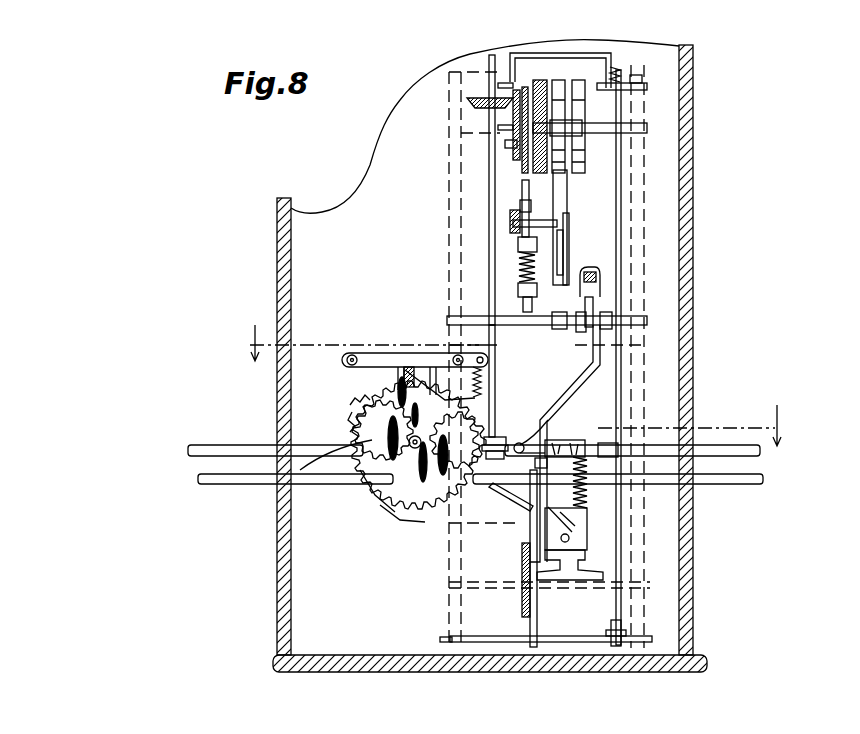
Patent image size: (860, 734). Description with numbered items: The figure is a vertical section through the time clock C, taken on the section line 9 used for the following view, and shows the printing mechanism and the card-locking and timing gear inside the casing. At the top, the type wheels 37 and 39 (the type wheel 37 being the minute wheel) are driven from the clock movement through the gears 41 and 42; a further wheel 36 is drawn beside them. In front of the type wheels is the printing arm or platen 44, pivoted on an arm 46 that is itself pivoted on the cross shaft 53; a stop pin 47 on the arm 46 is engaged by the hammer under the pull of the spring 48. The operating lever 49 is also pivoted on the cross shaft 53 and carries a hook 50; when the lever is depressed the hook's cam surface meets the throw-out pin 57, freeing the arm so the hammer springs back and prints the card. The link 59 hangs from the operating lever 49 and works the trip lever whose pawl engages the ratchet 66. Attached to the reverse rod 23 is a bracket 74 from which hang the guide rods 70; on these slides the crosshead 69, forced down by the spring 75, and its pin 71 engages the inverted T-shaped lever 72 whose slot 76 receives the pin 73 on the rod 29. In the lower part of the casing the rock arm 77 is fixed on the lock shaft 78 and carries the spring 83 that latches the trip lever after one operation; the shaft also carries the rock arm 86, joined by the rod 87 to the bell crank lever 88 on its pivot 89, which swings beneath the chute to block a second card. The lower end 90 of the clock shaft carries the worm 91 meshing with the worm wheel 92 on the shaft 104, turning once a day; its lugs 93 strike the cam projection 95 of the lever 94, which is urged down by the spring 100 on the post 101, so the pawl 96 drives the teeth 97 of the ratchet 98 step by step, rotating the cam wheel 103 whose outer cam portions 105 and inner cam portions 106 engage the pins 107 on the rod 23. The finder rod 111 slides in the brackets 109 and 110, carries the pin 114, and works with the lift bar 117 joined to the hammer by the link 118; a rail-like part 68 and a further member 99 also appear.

The time clock C is at (693, 152).
The section line 9- 9 is at (513, 385).
The reverse rod 23 is at (230, 446).
The rod 29 is at (222, 488).
The electromagnet coil 36 is at (560, 80).
The type wheel 37 is at (545, 80).
The type wheel 39 is at (580, 80).
The gear 41 is at (468, 104).
The gear 42 is at (505, 144).
The printing arm or platen 44 is at (582, 136).
The arm 46 is at (573, 255).
The stop pin 47 is at (569, 232).
The spring 48 is at (565, 212).
The operating lever 49 is at (600, 280).
The hook 50 is at (591, 268).
The cross shaft 53 is at (540, 330).
The throw-out pin 57 is at (572, 334).
The link 59 is at (610, 368).
The ratchet 66 is at (522, 590).
The rail section 68 is at (588, 578).
The crosshead 69 is at (588, 525).
The guide rods 70 is at (573, 494).
The pin 71 is at (569, 542).
The inverted T-shaped lever 72 is at (505, 512).
The pin 73 is at (585, 445).
The bracket 74 is at (605, 437).
The spring 75 is at (560, 440).
The slot 76 is at (536, 462).
The rock arm 77 is at (525, 642).
The lock shaft 78 is at (595, 645).
The spring 83 is at (450, 510).
The rock arm 86 is at (622, 630).
The rod 87 is at (643, 200).
The bell crank lever 88 is at (516, 55).
The pivot 89 is at (637, 78).
The lower end of clock operated shaft 90 is at (489, 57).
The worm 91 is at (519, 442).
The worm wheel 92 is at (395, 510).
The lugs 93 is at (396, 352).
The lever 94 is at (433, 352).
The cam projection 95 is at (408, 355).
The pawl 96 is at (497, 400).
The teeth 97 is at (380, 470).
The ratchet 98 is at (350, 475).
The rod 99 is at (440, 352).
The spring 100 is at (482, 370).
The post 101 is at (482, 392).
The ratchet or cam wheel 103 is at (380, 505).
The shaft 104 is at (370, 515).
The outer cam portions 105 is at (372, 420).
The inner cam portions 106 is at (370, 405).
The pins 107 is at (574, 400).
The bracket 109 is at (518, 245).
The bracket 110 is at (518, 290).
The finder rod 111 is at (522, 192).
The pin 114 is at (520, 205).
The lift bar 117 is at (512, 225).
The link 118 is at (540, 220).